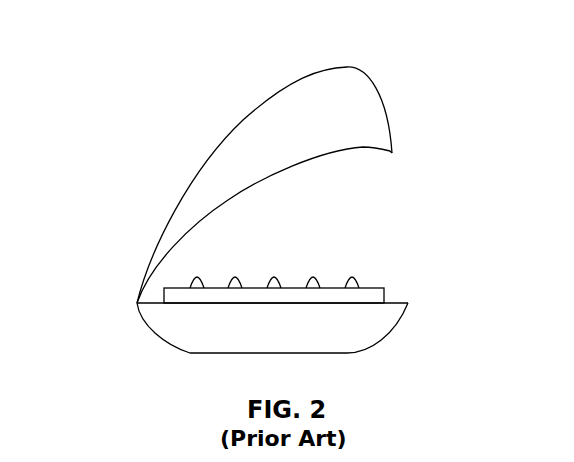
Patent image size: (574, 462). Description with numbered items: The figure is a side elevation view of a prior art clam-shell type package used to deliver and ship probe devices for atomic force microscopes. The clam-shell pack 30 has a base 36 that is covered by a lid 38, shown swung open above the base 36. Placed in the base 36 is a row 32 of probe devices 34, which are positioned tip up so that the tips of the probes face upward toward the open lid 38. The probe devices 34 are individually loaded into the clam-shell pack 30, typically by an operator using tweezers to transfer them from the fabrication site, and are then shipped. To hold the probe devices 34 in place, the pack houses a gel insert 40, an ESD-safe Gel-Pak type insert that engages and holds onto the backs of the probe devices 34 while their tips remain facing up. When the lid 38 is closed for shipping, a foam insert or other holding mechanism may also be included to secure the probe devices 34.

The clam-shell pack 30 is at (117, 109).
The row of probe devices 32 is at (366, 268).
The probe devices 34 is at (198, 275).
The base 36 is at (150, 326).
The lid 38 is at (178, 191).
The gel insert 40 is at (386, 292).